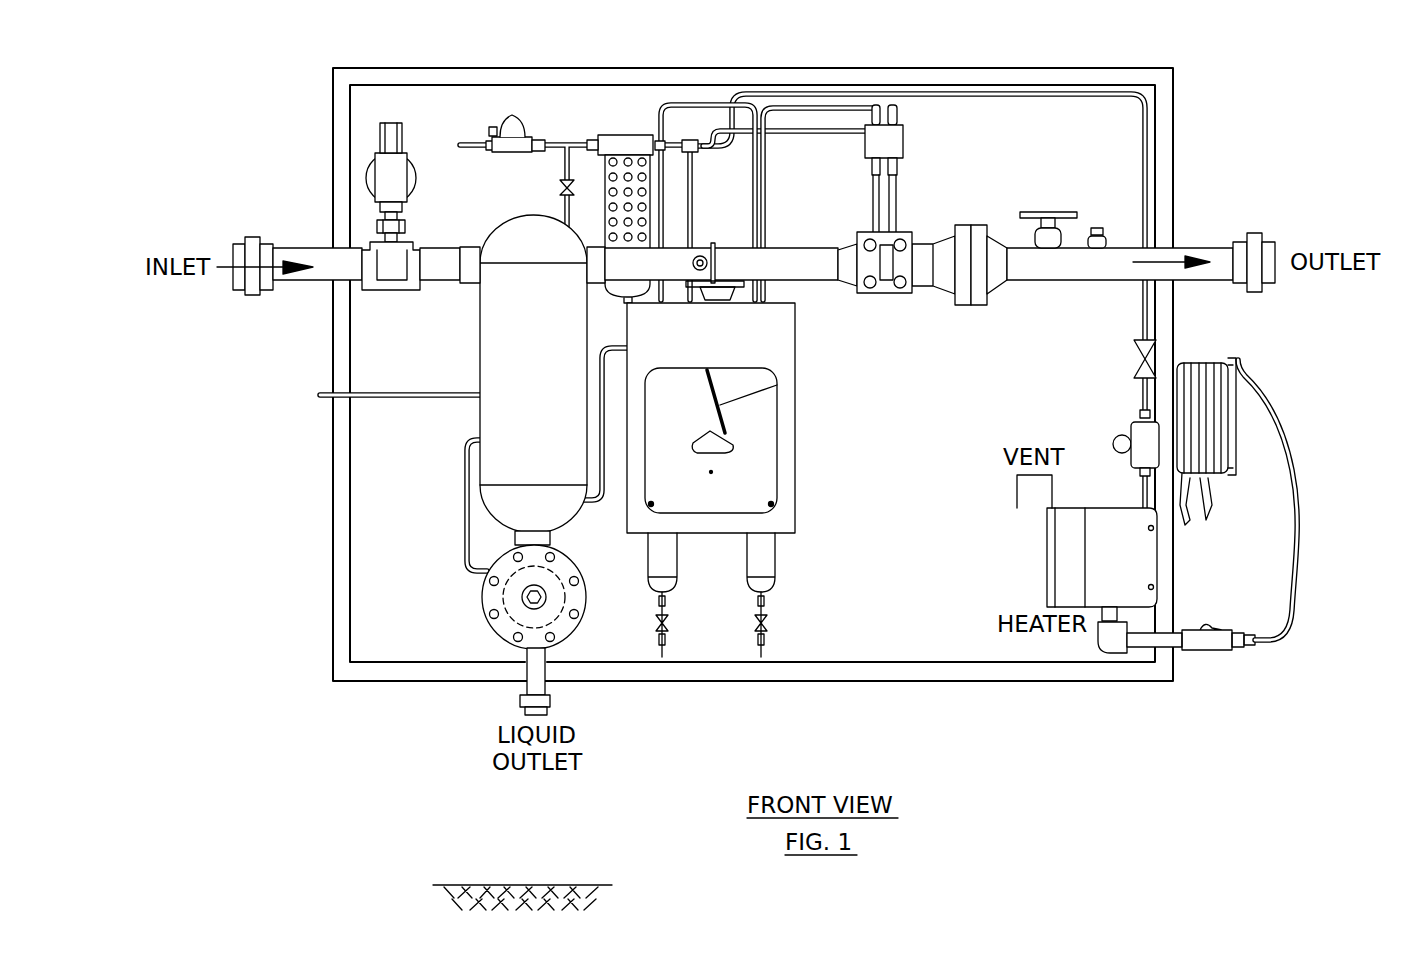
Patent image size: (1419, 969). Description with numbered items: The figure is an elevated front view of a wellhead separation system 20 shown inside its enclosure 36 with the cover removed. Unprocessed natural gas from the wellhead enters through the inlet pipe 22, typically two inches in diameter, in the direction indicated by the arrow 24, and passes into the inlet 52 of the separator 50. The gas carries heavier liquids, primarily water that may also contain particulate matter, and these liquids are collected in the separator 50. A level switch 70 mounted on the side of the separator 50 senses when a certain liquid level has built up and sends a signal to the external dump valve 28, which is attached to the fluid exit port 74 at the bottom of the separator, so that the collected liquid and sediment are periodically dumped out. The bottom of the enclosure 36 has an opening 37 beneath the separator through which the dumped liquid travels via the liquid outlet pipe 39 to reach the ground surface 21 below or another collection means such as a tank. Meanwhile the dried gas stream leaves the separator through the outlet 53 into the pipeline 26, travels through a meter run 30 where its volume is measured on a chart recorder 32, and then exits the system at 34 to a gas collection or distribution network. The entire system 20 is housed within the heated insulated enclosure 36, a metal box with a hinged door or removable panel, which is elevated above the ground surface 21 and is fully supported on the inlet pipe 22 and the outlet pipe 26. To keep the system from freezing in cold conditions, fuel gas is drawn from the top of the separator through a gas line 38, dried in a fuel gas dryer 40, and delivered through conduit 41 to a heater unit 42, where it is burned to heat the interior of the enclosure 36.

The separation system 20 is at (427, 714).
The ground surface 21 is at (555, 883).
The inlet pipe 22 is at (302, 243).
The arrow 24 is at (238, 278).
The pipeline 26 is at (803, 283).
The dump valve 28 is at (482, 590).
The meter run 30 is at (884, 300).
The chart recorder 32 is at (797, 418).
The system gas exit 34 is at (1275, 240).
The enclosure 36 is at (359, 690).
The opening 37 is at (547, 684).
The gas line 38 is at (565, 168).
The liquid outlet pipe 39 is at (551, 715).
The fuel gas dryer 40 is at (626, 133).
The conduit 41 is at (1008, 98).
The heater unit 42 is at (1047, 556).
The separator 50 is at (478, 310).
The inlet 52 is at (457, 245).
The outlet 53 is at (593, 240).
The level switch 70 is at (515, 430).
The fluid exit port 74 is at (553, 540).